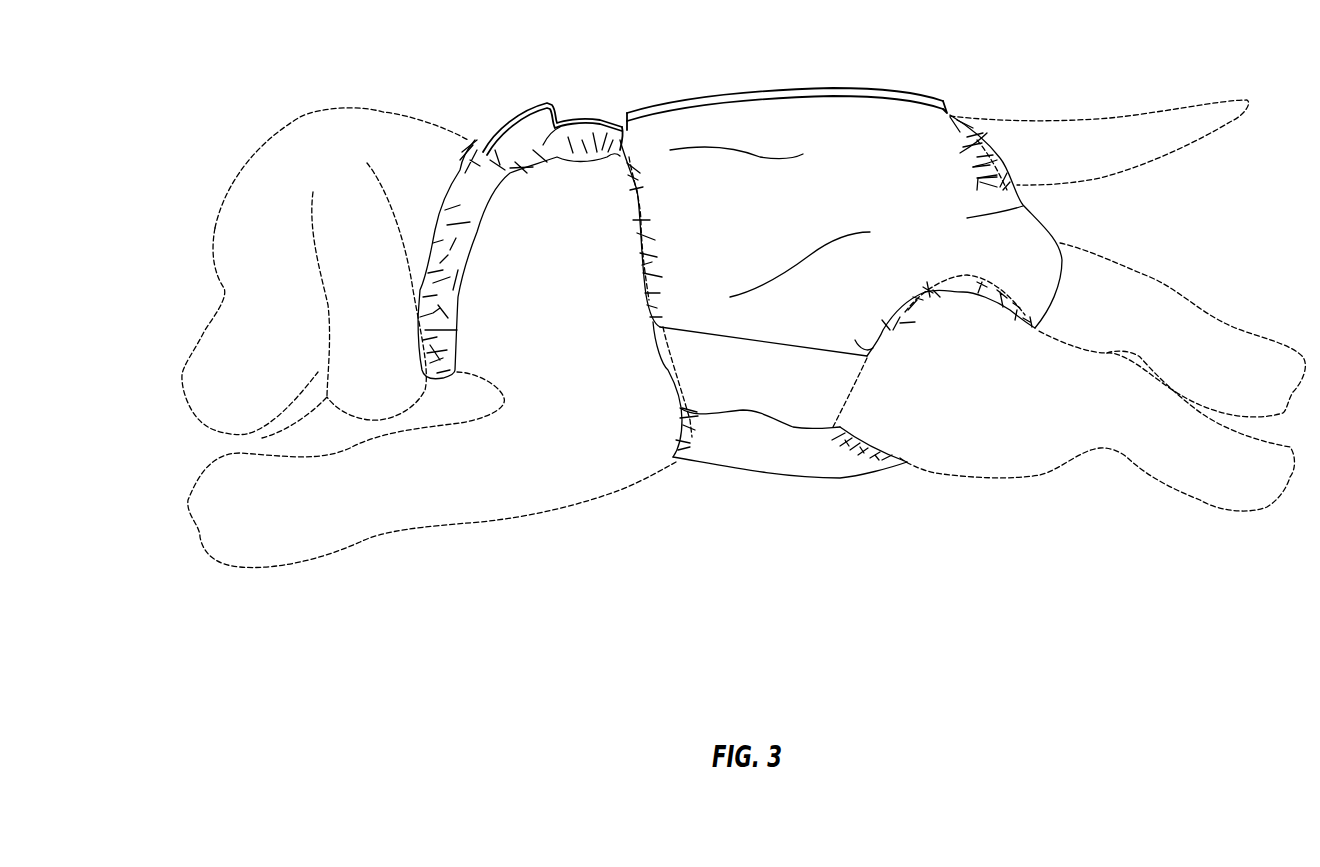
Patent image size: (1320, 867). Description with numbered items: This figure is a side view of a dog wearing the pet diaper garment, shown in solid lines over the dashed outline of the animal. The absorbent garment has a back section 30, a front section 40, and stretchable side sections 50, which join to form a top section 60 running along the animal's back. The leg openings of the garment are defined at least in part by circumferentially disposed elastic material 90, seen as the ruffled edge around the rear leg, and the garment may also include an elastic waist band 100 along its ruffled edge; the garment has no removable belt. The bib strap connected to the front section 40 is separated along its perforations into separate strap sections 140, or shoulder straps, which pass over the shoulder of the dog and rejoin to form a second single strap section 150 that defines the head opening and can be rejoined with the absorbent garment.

The back section 30 is at (995, 265).
The front section 40 is at (764, 487).
The stretchable side sections 50 is at (777, 329).
The top section 60 is at (752, 88).
The elastic material 90 is at (898, 314).
The elastic waist band 100 is at (653, 235).
The separate strap sections 140 is at (456, 297).
The second single strap section 150 is at (520, 108).